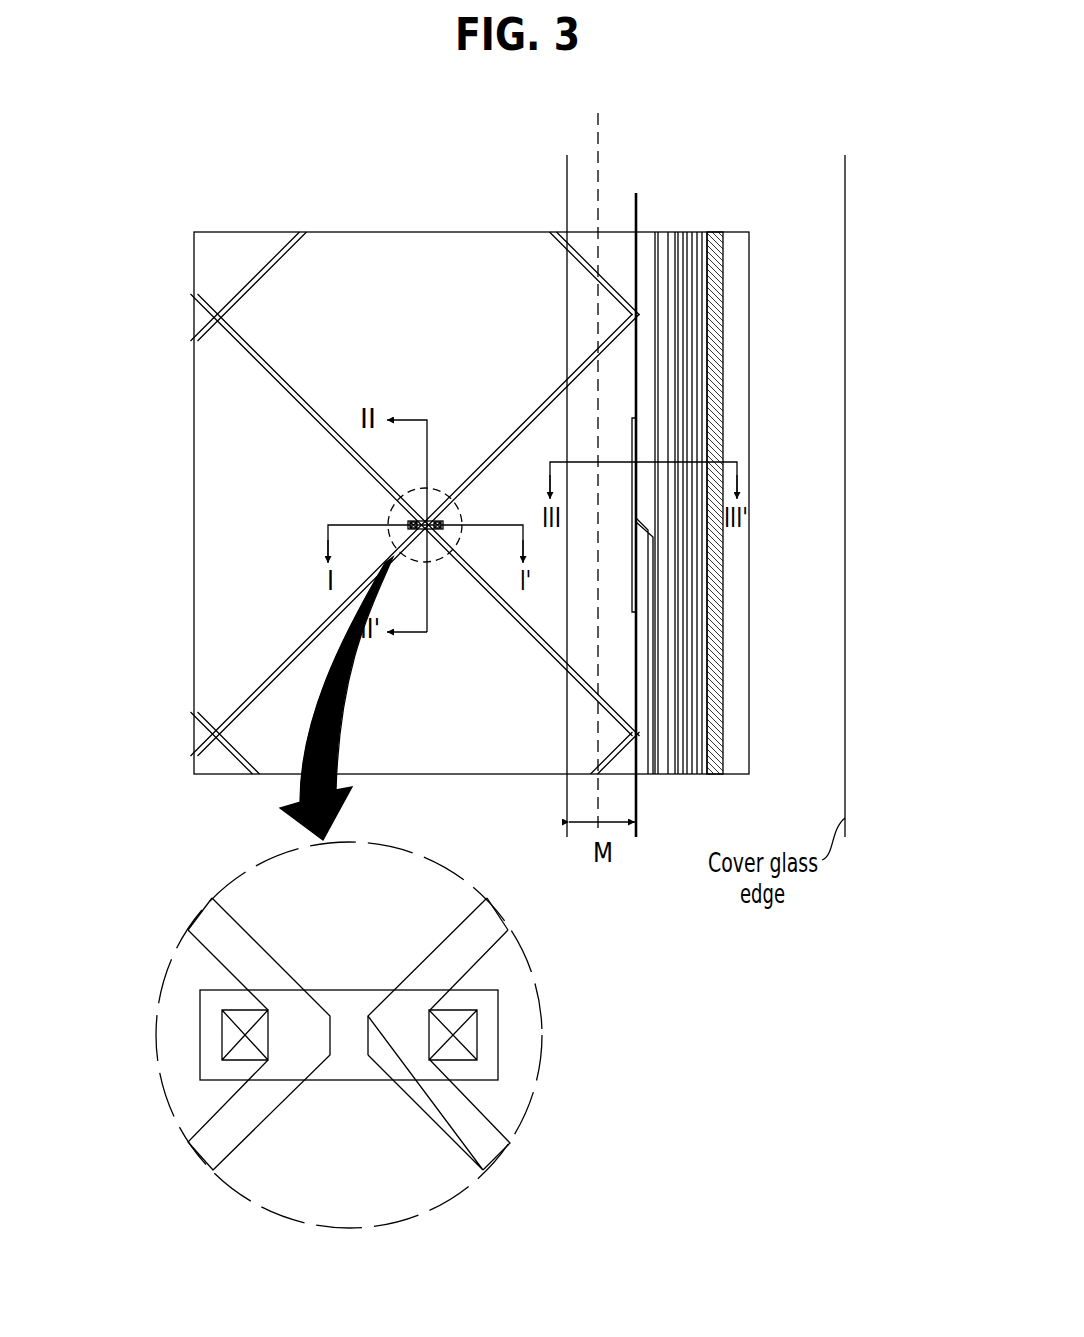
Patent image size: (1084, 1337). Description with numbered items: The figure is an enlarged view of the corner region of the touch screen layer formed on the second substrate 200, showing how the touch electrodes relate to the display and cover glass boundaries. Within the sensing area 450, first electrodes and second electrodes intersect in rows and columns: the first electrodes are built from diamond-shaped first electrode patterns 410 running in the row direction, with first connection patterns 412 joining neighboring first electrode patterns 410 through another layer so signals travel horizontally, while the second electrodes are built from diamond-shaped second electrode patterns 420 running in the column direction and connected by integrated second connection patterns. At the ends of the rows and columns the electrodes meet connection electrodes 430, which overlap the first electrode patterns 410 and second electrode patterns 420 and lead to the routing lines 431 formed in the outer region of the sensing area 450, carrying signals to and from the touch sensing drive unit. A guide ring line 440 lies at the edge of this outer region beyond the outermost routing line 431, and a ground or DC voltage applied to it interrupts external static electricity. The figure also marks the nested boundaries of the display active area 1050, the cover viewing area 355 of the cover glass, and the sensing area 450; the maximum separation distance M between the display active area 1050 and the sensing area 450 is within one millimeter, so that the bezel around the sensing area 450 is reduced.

The second substrate 200 is at (750, 600).
The first electrode patterns 410 is at (208, 512).
The first connection patterns 412 is at (415, 497).
The second electrode patterns 420 is at (325, 252).
The connection electrodes 430 is at (635, 443).
The routing lines 431 is at (705, 782).
The guide ring line 440 is at (717, 688).
The cover viewing area 355 is at (596, 123).
The display active area 1050 is at (565, 164).
The sensing area 450 is at (634, 206).